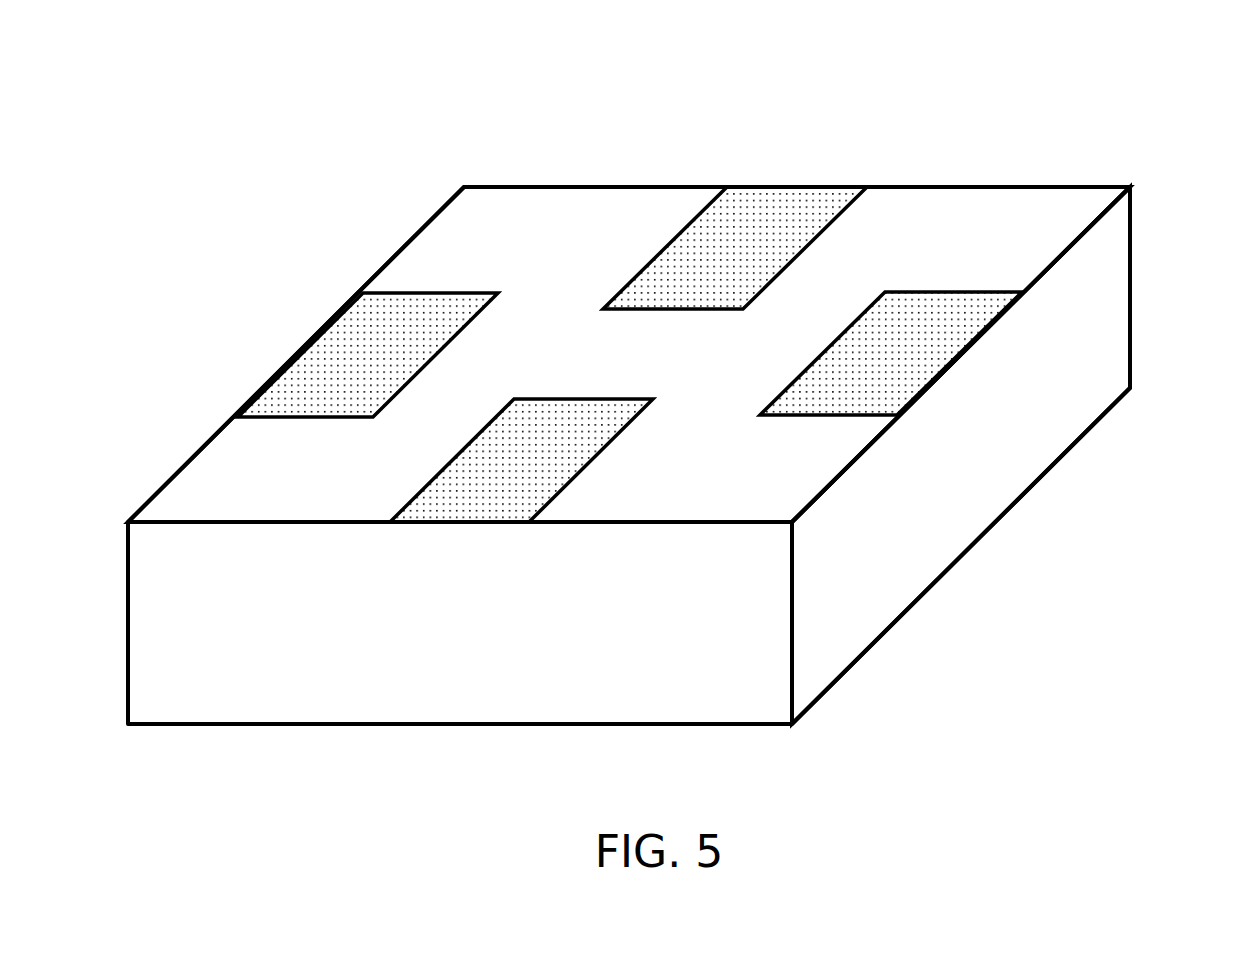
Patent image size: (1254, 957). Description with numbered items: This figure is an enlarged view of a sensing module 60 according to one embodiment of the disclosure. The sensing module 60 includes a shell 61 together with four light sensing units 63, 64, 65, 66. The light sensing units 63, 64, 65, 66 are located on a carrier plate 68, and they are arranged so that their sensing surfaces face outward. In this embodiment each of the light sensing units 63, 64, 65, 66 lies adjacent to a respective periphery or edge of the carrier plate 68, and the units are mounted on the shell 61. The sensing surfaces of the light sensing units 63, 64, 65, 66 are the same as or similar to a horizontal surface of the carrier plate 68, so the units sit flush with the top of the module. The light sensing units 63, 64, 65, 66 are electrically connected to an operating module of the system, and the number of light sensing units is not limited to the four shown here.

The sensing module 60 is at (317, 87).
The shell 61 is at (1132, 285).
The light sensing unit 63 is at (765, 215).
The light sensing unit 64 is at (910, 353).
The light sensing unit 65 is at (498, 490).
The light sensing unit 66 is at (363, 350).
The carrier plate 68 is at (627, 371).